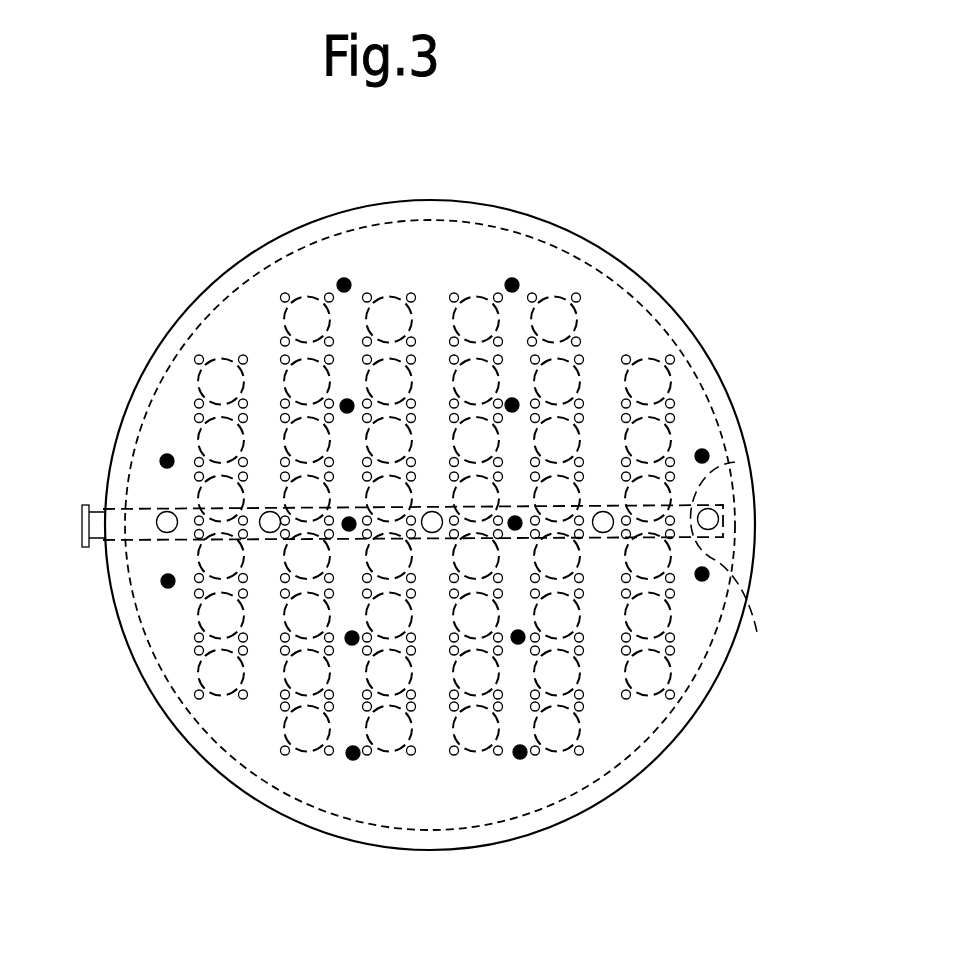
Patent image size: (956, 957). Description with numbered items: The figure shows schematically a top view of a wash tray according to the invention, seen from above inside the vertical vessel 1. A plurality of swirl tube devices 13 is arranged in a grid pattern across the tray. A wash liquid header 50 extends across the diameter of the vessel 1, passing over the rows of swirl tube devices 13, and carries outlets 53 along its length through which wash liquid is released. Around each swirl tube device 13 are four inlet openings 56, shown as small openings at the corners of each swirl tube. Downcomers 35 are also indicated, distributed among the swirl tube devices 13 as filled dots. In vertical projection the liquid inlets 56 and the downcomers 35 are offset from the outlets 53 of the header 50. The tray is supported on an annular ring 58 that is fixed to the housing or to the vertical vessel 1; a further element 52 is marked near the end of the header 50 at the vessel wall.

The vessel 1 is at (481, 199).
The swirl tube device 13 is at (466, 318).
The downcomer 35 is at (338, 283).
The wash liquid header 50 is at (735, 462).
The nozzle opening 52 is at (735, 564).
The outlet 53 is at (432, 535).
The inlet opening 56 is at (580, 341).
The annular ring 58 is at (720, 664).